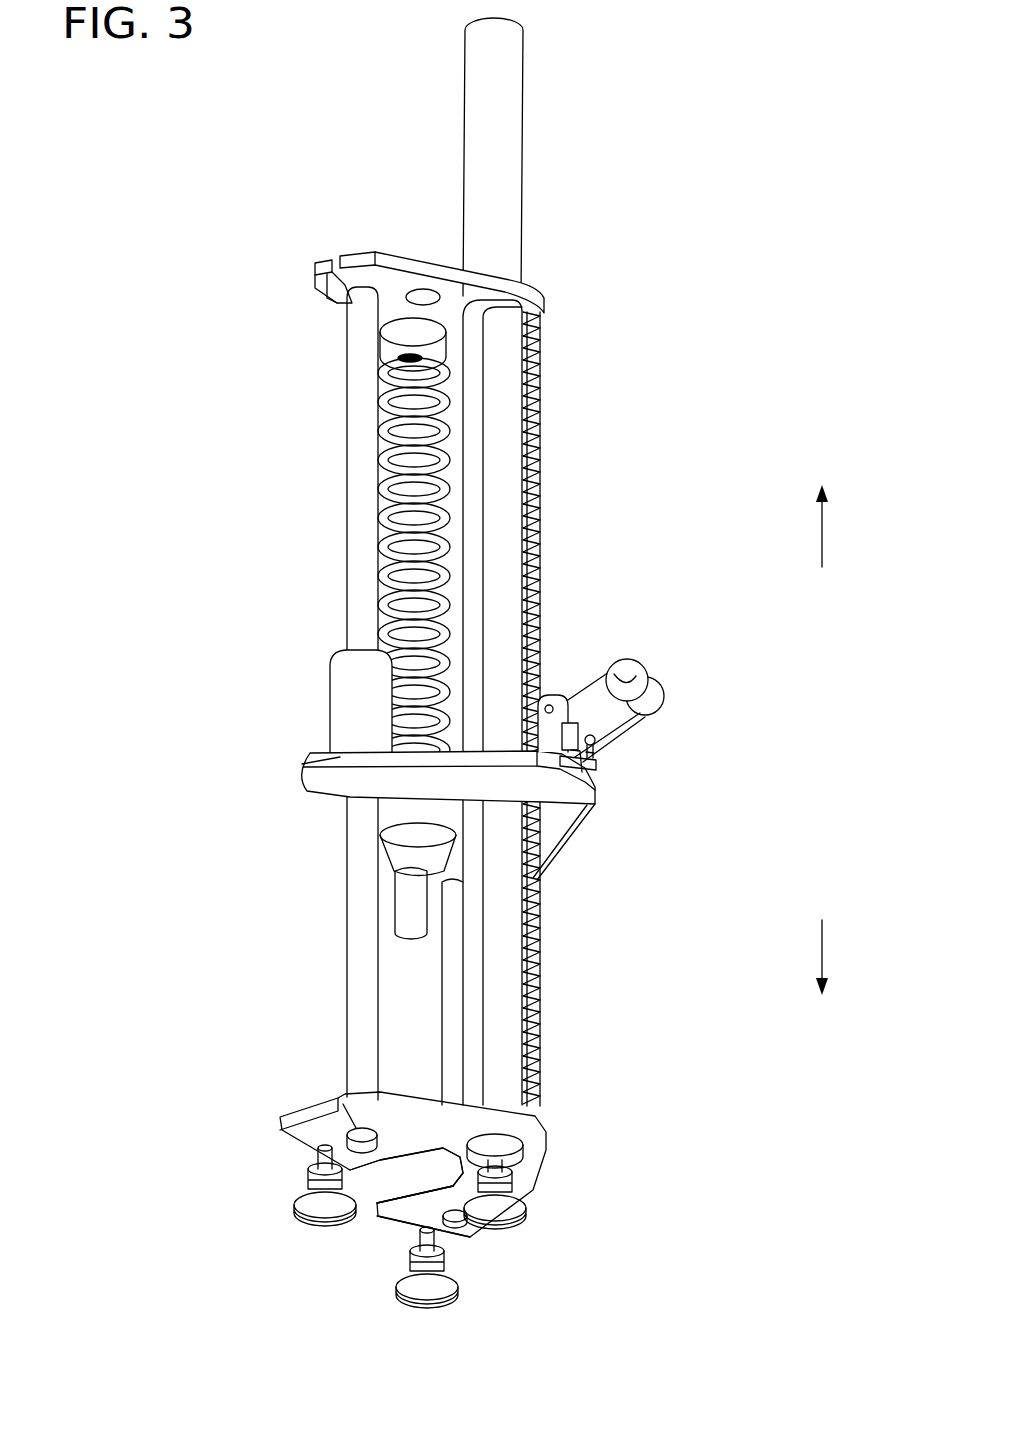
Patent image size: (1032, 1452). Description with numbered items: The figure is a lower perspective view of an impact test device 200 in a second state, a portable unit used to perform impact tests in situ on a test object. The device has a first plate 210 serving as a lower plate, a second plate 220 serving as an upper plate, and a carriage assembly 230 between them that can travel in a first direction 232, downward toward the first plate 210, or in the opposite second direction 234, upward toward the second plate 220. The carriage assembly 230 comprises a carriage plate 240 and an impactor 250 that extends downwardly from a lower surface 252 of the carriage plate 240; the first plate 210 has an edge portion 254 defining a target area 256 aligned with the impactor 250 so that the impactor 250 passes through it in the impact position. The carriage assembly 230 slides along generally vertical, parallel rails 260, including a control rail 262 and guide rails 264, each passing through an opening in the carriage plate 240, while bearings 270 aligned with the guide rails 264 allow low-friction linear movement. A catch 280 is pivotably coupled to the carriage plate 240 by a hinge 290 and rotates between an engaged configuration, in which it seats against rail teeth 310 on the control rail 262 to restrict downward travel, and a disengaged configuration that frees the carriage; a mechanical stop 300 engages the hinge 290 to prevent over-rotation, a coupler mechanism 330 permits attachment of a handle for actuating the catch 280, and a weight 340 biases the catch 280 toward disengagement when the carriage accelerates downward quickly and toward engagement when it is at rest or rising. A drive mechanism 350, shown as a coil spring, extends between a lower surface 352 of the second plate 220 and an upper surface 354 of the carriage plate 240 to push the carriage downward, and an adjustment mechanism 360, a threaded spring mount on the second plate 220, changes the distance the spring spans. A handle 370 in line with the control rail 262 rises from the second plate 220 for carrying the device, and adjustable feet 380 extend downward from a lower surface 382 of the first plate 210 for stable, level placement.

The impact test device 200 is at (682, 1324).
The first plate 210 is at (295, 1115).
The second plate 220 is at (330, 262).
The carriage assembly 230 is at (196, 775).
The first direction 232 is at (850, 957).
The second direction 234 is at (850, 526).
The carriage plate 240 is at (310, 805).
The impactor 250 is at (410, 940).
The surface 252 is at (555, 835).
The edge portion 254 is at (375, 1208).
The target area 256 is at (410, 1191).
The rails 260 is at (210, 466).
The control rail 262 is at (512, 447).
The guide rails 264 is at (358, 410).
The bearings 270 is at (340, 680).
The catch 280 is at (690, 640).
The hinge 290 is at (555, 690).
The stop 300 is at (590, 762).
The rail teeth 310 is at (530, 505).
The coupler mechanism 330 is at (600, 745).
The weight 340 is at (632, 665).
The drive mechanism 350 is at (385, 500).
The surface 352 is at (316, 300).
The surface 354 is at (298, 756).
The adjustment mechanism 360 is at (410, 330).
The handle 370 is at (503, 143).
The feet 380 is at (310, 1215).
The surface 382 is at (300, 1140).